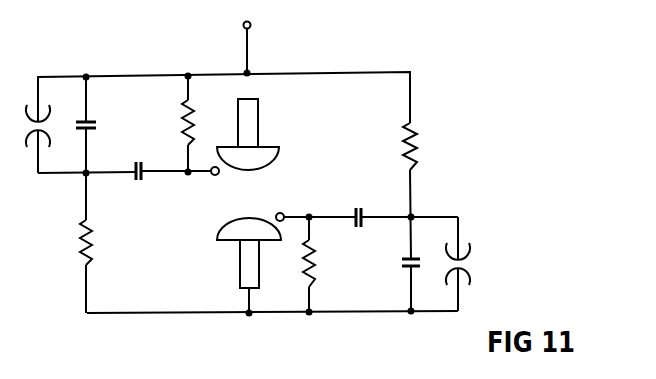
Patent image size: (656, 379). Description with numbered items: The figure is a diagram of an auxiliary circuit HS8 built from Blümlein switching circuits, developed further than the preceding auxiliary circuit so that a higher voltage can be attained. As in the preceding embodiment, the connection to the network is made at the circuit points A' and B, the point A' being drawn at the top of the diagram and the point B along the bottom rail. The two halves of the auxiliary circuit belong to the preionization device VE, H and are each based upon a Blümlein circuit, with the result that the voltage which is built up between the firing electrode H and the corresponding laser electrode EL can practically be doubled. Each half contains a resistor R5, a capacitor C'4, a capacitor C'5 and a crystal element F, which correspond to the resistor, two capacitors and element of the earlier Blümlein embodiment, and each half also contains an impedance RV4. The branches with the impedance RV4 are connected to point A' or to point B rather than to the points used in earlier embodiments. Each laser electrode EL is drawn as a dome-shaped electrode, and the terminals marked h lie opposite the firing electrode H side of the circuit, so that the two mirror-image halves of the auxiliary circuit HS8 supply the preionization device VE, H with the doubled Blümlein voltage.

The circuit point A' is at (258, 43).
The circuit point B is at (249, 317).
The auxiliary circuit HS8 is at (354, 113).
The preionization device VE is at (480, 133).
The firing electrode H is at (209, 208).
The terminal h is at (219, 175).
The circuit element F is at (49, 106).
The capacitor C'5 is at (248, 194).
The capacitor C'4 is at (251, 194).
The resistor R5 is at (182, 126).
The impedance RV4 is at (81, 227).
The laser electrode EL is at (281, 152).